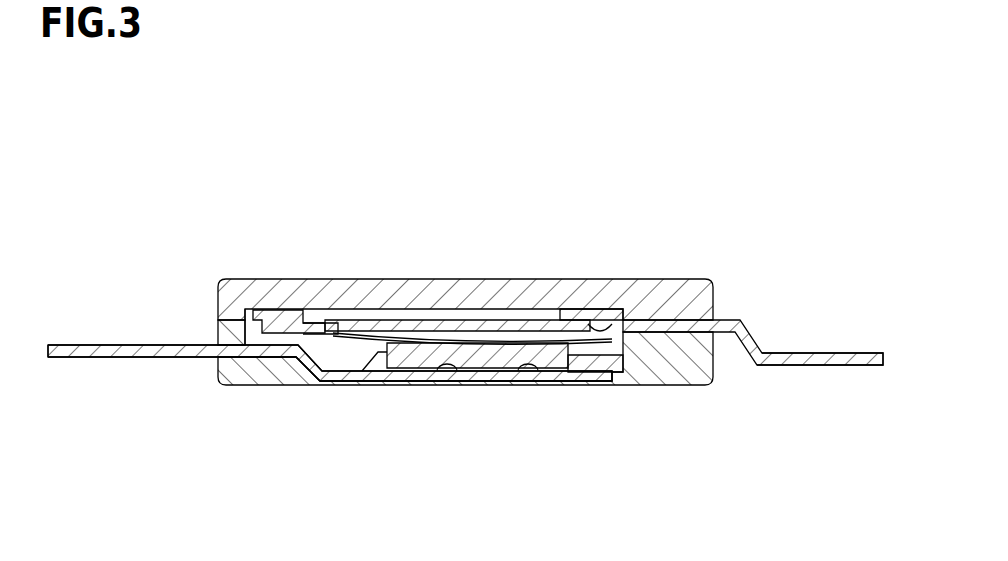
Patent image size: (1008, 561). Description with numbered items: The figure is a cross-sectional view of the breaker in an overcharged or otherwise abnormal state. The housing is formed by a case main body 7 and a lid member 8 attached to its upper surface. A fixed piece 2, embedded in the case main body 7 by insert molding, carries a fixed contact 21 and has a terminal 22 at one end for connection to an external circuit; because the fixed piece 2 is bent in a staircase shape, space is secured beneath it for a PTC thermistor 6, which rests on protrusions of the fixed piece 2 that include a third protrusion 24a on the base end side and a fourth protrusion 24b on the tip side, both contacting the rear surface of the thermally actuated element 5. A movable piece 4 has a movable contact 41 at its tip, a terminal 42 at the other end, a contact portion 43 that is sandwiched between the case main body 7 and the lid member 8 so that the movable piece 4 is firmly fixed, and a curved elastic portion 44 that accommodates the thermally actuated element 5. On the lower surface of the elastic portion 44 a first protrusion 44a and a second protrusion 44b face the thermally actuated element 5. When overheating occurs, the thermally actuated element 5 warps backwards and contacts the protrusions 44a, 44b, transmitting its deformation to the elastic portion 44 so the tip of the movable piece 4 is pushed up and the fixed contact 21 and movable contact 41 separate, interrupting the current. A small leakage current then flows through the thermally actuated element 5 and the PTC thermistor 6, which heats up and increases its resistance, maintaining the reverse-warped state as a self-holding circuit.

The fixed piece 2 is at (182, 345).
The fixed contact 21 is at (270, 347).
The terminal 22 is at (128, 352).
The third protrusion 24a is at (524, 372).
The fourth protrusion 24b is at (447, 372).
The movable piece 4 is at (762, 337).
The movable contact 41 is at (283, 333).
The terminal 42 is at (825, 365).
The contact portion 43 is at (647, 318).
The elastic portion 44 is at (427, 322).
The first protrusion 44a is at (607, 323).
The second protrusion 44b is at (335, 322).
The thermally actuated element 5 is at (562, 357).
The PTC thermistor 6 is at (485, 357).
The case main body 7 is at (660, 363).
The lid member 8 is at (492, 295).